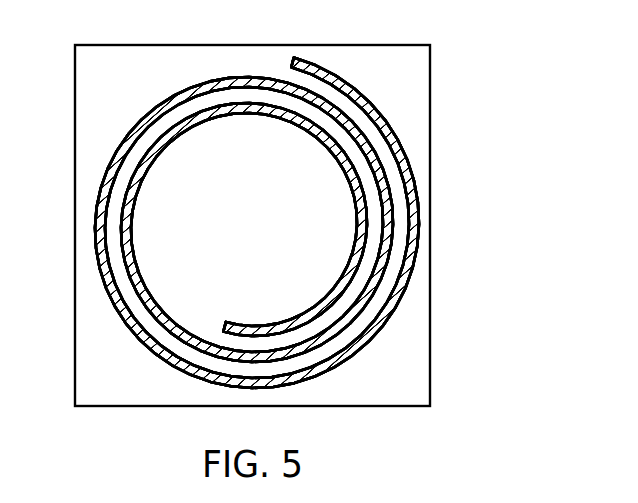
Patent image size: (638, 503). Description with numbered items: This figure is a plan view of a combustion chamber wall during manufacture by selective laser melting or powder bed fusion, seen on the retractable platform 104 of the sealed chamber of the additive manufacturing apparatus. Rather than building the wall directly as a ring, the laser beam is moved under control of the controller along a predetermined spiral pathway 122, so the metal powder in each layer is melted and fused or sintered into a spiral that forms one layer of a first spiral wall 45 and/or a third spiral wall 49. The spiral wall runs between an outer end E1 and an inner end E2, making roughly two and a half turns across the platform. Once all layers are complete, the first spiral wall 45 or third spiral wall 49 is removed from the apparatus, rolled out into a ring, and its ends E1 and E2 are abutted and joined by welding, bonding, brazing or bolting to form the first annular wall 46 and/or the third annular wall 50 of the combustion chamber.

The retractable platform 104 is at (413, 95).
The predetermined spiral pathway 122 is at (410, 162).
The first annular wall 46 is at (415, 213).
The third annular wall 50 is at (415, 213).
The first spiral wall 45 is at (415, 249).
The third spiral wall 49 is at (415, 249).
The end of the spiral wall E1 is at (290, 61).
The end of the spiral wall E2 is at (223, 326).